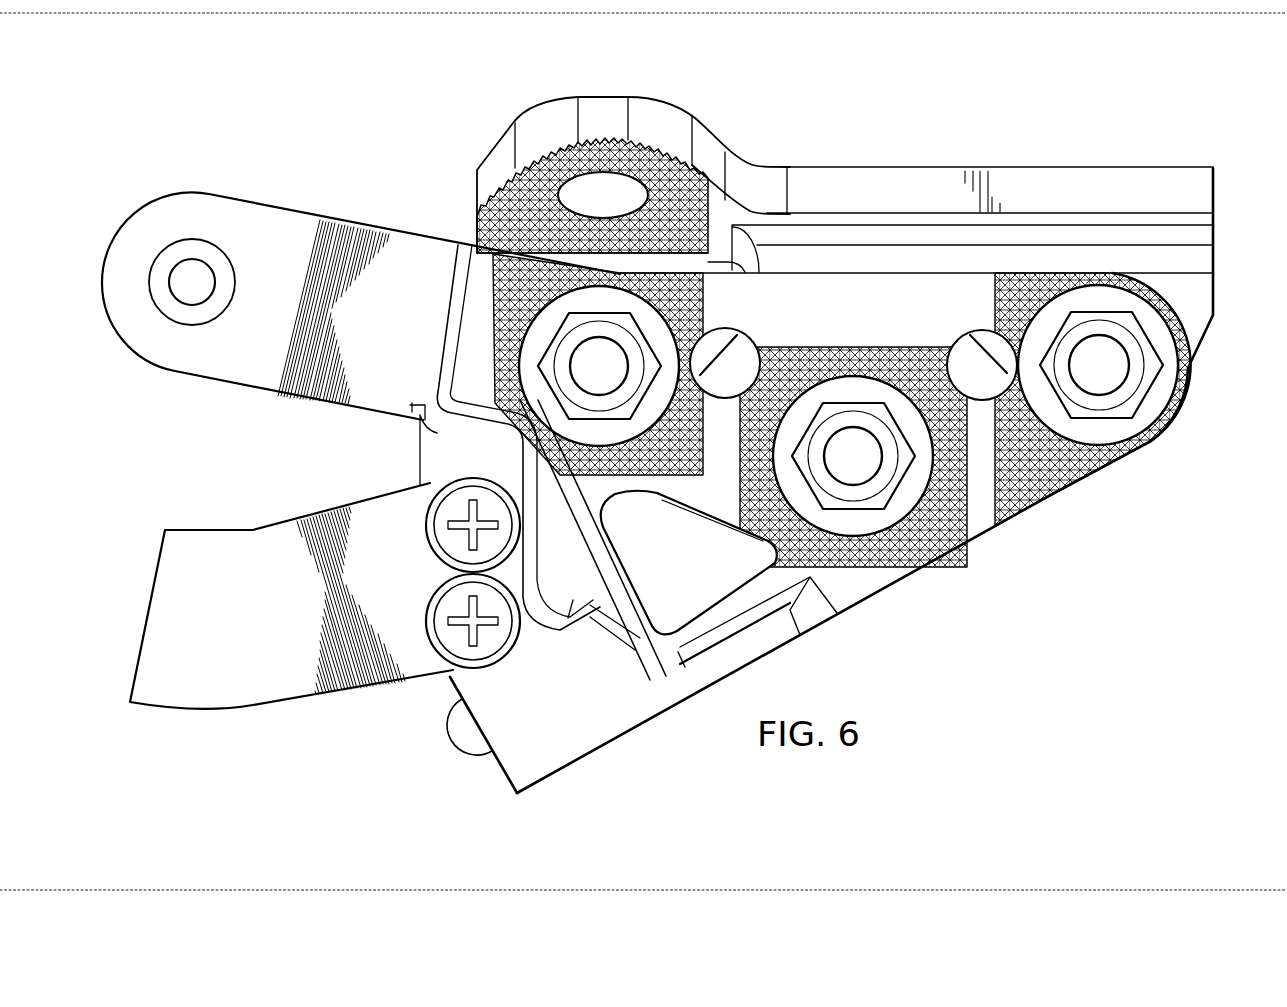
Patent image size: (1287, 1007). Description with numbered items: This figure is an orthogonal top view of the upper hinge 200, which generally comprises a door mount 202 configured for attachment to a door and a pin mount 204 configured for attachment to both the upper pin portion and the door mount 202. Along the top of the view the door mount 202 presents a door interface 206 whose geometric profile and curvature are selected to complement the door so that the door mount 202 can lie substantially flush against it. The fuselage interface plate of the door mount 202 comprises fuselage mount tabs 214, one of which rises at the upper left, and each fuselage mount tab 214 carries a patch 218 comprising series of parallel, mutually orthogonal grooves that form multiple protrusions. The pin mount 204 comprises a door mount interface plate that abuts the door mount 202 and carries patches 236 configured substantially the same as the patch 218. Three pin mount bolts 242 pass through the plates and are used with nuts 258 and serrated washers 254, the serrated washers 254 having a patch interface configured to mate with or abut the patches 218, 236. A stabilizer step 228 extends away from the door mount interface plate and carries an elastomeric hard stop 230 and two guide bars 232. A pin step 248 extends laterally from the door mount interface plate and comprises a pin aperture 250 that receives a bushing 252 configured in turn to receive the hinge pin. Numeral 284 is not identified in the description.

The upper hinge 200 is at (986, 98).
The door mount 202 is at (477, 193).
The pin mount 204 is at (860, 597).
The door interface 206 is at (1075, 167).
The fuselage mount tabs 214 is at (601, 108).
The patch 218 is at (665, 158).
The stabilizer step 228 is at (595, 748).
The elastomeric hard stop 230 is at (448, 740).
The guide bars 232 is at (210, 708).
The patches 236 is at (490, 298).
The pin mount bolts 242 is at (527, 430).
The pin step 248 is at (172, 200).
The pin aperture 250 is at (223, 280).
The bushing 252 is at (220, 300).
The serrated washers 254 is at (533, 347).
The nuts 258 is at (580, 390).
The curved rim 284 is at (1148, 418).